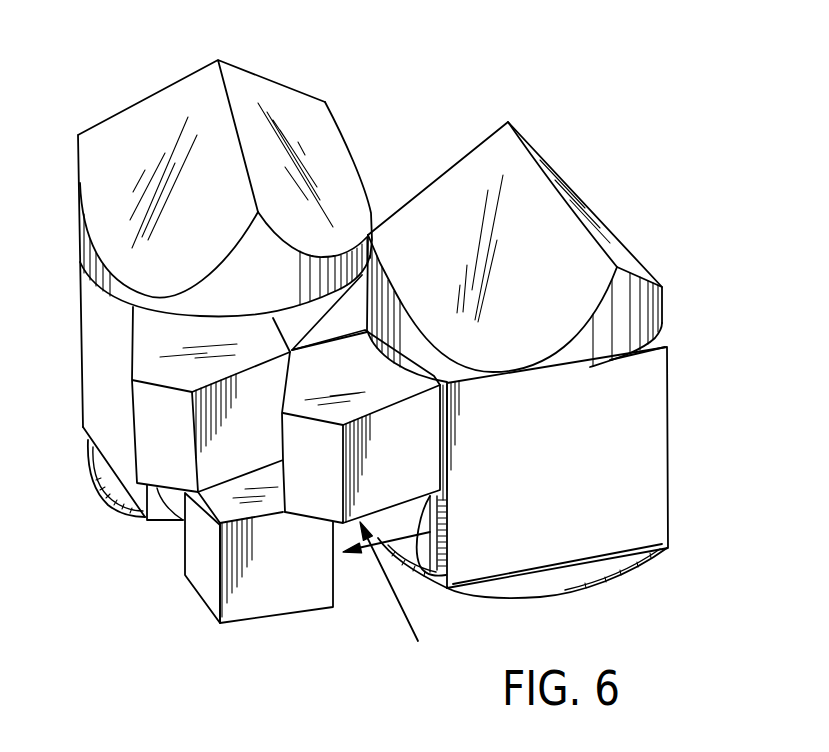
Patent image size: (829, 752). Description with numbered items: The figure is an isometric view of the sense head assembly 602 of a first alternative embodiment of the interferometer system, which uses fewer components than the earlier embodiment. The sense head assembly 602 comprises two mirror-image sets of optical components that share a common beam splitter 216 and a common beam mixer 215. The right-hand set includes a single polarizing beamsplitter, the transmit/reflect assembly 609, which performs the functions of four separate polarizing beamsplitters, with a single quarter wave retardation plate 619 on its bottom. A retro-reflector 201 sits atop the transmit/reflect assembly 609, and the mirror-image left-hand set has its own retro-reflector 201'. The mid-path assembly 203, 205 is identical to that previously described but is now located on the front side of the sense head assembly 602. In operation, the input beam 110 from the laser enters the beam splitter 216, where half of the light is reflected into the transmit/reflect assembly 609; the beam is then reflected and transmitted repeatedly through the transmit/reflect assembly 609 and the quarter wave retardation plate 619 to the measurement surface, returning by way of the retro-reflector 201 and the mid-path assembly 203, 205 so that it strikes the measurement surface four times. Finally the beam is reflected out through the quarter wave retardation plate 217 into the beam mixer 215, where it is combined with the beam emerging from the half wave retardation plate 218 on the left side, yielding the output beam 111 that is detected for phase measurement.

The retro-reflector 201' is at (225, 228).
The retro-reflector 201 is at (514, 229).
The sense head assembly 602 is at (428, 95).
The mid-path assembly 205 is at (333, 325).
The mid-path assembly 203 is at (428, 473).
The transmit/reflect assembly 609 is at (588, 506).
The quarter wave retardation plate 217 is at (428, 517).
The quarter wave retardation plate 619 is at (638, 565).
The half wave retardation plate 218 is at (178, 503).
The beam mixer 215 is at (257, 603).
The beam splitter 216 is at (346, 534).
The input beam 110 is at (413, 620).
The output beam 111 is at (424, 533).